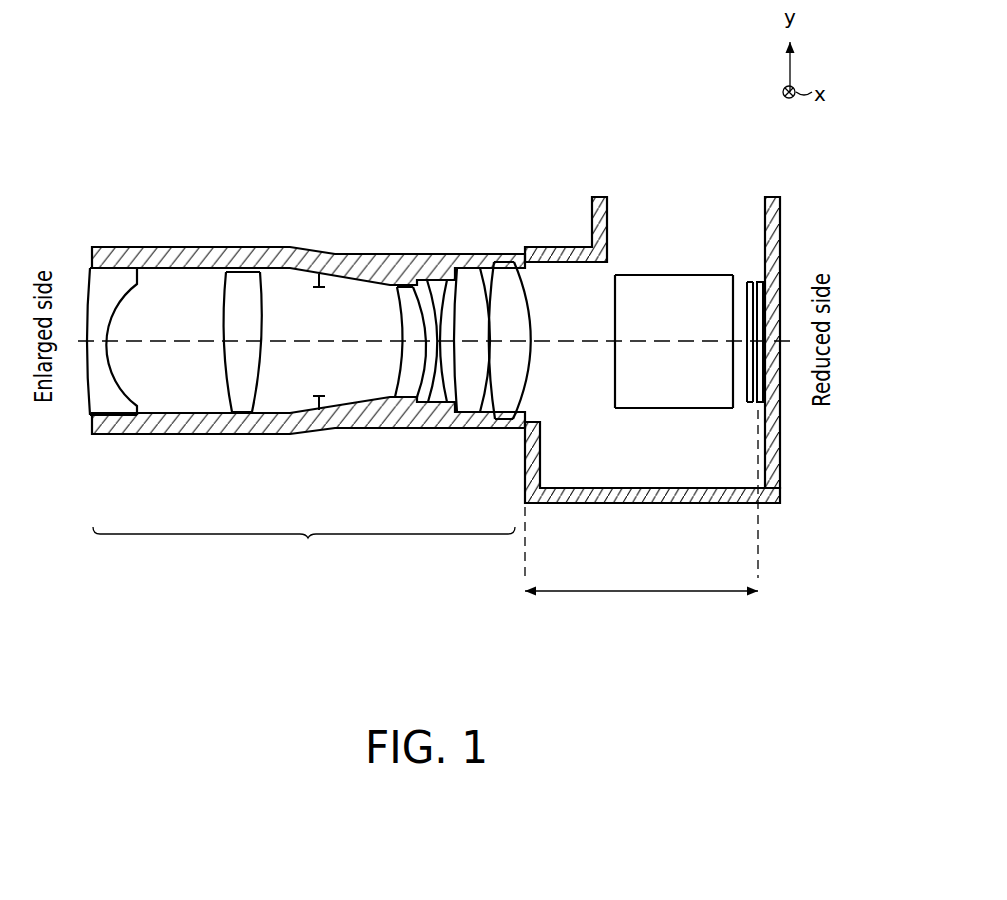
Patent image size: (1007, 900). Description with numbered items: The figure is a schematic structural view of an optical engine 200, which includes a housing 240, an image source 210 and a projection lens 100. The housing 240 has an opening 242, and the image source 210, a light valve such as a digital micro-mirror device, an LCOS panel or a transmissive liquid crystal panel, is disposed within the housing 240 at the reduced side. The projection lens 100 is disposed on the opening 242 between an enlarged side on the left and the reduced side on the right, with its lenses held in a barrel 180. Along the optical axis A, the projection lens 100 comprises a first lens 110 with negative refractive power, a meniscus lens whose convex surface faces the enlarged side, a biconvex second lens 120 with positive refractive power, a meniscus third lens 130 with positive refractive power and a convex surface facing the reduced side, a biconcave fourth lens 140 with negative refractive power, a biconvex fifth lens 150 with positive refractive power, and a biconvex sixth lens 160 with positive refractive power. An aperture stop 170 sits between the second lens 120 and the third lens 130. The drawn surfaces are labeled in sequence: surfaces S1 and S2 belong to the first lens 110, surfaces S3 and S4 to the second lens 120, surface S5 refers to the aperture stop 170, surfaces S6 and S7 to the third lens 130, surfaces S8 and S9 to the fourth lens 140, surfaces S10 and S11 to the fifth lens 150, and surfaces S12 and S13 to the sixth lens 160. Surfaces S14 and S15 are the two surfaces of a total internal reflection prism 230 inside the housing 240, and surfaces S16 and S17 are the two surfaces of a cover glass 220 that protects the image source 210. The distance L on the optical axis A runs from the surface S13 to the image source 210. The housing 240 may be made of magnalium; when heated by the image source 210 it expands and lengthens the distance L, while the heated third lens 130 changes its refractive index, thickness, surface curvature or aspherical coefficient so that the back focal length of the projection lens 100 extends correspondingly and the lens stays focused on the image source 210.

The projection lens 100 is at (304, 549).
The first lens 110 is at (118, 356).
The second lens 120 is at (242, 356).
The third lens 130 is at (382, 345).
The fourth lens 140 is at (424, 349).
The fifth lens 150 is at (468, 347).
The sixth lens 160 is at (514, 342).
The aperture stop 170 is at (312, 363).
The lens barrel 180 is at (162, 429).
The optical engine 200 is at (816, 660).
The image source 210 is at (760, 275).
The cover glass 220 is at (766, 368).
The glass block / prism 230 is at (646, 267).
The housing 240 is at (599, 196).
The opening 242 is at (536, 420).
The surface S1 is at (88, 284).
The surface S2 is at (132, 294).
The surface S3 is at (223, 291).
The surface S4 is at (261, 290).
The surface S5 is at (335, 277).
The surface S6 is at (390, 292).
The surface S7 is at (422, 291).
The surface S8 is at (432, 301).
The surface S9 is at (447, 307).
The surface S10 is at (458, 322).
The surface S11 is at (482, 292).
The surface S12 is at (498, 296).
The surface S13 is at (528, 291).
The surface S14 is at (612, 287).
The surface S15 is at (740, 281).
The surface S16 is at (743, 398).
The surface S17 is at (758, 393).
The optical axis A is at (78, 343).
The distance L is at (641, 518).